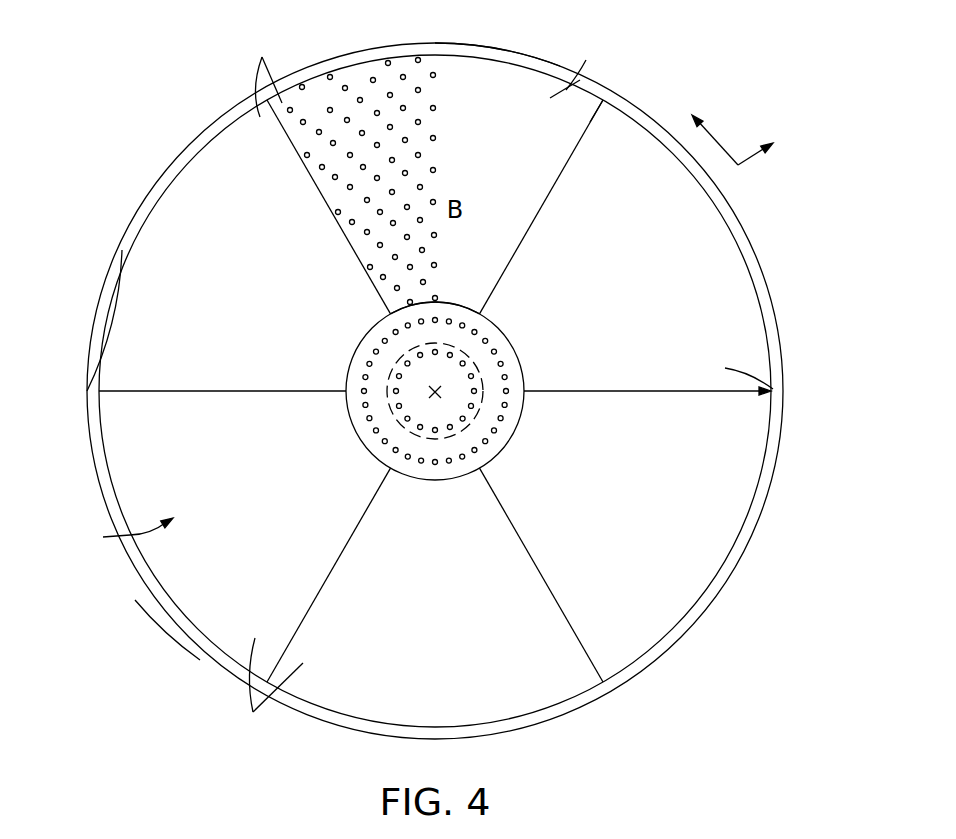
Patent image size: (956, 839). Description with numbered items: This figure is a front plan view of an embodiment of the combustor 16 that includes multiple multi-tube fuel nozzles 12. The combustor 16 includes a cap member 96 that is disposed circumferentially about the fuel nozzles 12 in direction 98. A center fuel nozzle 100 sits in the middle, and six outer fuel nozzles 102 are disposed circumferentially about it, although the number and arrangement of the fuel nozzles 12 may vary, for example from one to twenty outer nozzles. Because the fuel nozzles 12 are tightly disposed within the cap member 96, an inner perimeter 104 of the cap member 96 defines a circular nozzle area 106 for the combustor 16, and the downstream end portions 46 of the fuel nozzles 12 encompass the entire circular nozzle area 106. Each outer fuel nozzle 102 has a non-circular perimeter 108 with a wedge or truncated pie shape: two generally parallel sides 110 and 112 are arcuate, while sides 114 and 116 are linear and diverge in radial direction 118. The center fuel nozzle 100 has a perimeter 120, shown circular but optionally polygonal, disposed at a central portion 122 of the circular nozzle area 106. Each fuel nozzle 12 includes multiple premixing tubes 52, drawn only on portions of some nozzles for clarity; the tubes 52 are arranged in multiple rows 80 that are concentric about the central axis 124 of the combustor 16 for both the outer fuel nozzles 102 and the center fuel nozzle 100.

The combustor 16 is at (154, 104).
The cap member 96 is at (234, 108).
The inner perimeter 104 is at (152, 204).
The downstream end portions 46 is at (192, 600).
The side 110 is at (506, 63).
The circular nozzle area 106 is at (116, 534).
The side 114 is at (328, 204).
The side 116 is at (542, 204).
The perimeter 120 is at (373, 448).
The central portion 122 is at (452, 449).
The outer fuel nozzles 102 is at (800, 394).
The non-circular perimeter 108 is at (603, 115).
The direction 98 is at (722, 143).
The radial direction 118 is at (752, 167).
The center fuel nozzle 100 is at (488, 340).
The side 112 is at (460, 303).
The central axis 124 is at (438, 390).
The premixing tubes 52 is at (418, 123).
The fuel nozzles 12 is at (327, 104).
The rows 80 is at (374, 84).